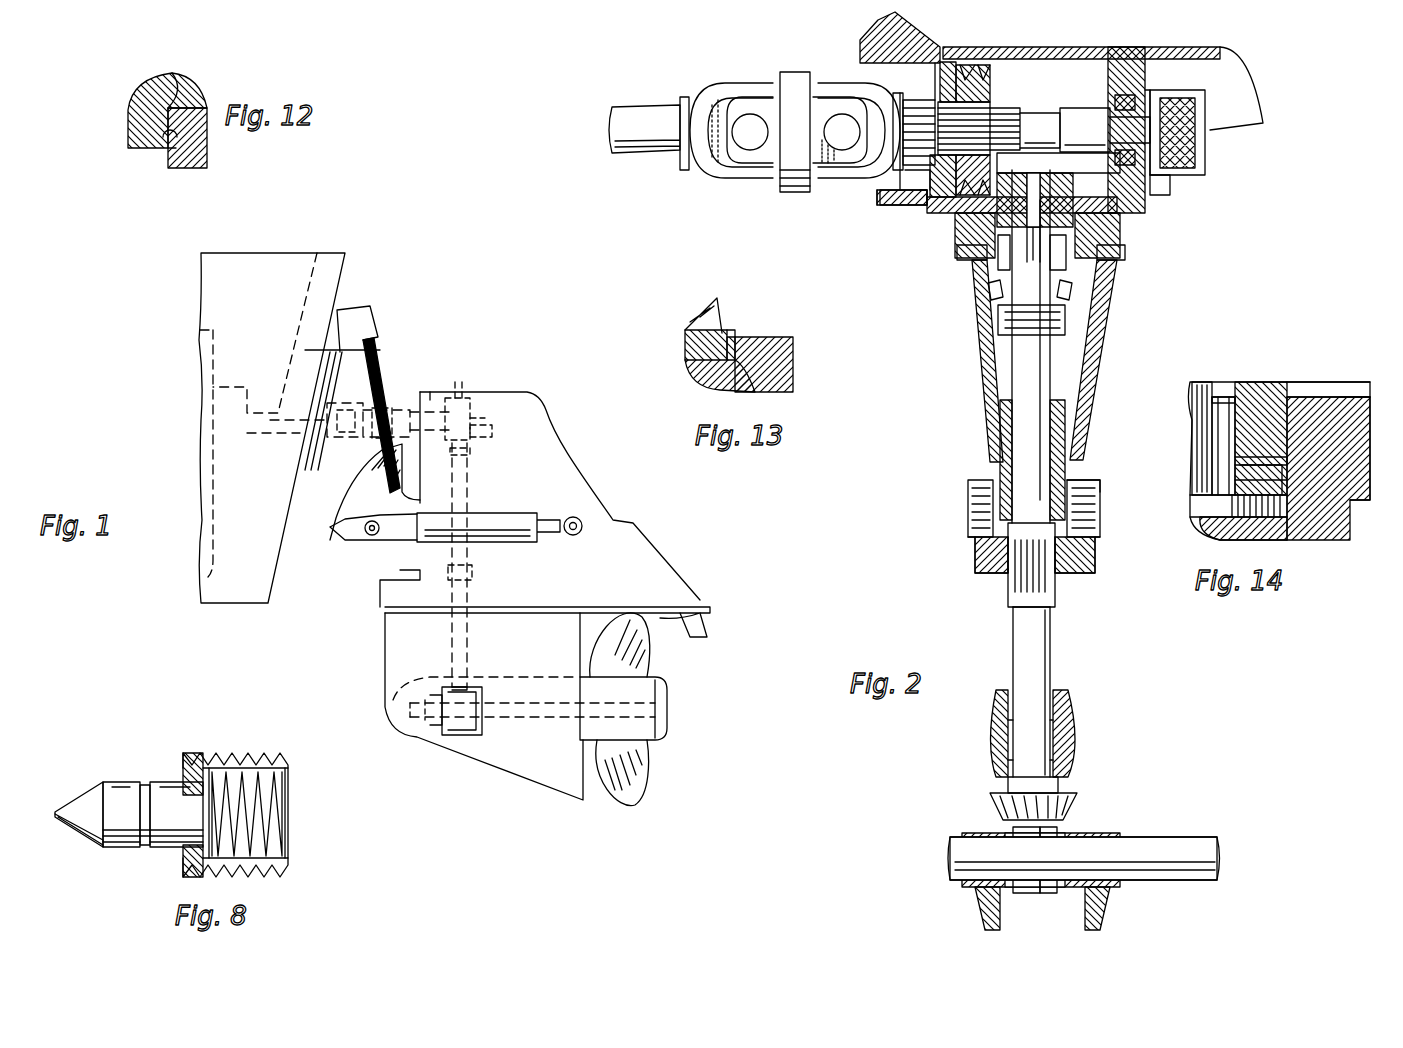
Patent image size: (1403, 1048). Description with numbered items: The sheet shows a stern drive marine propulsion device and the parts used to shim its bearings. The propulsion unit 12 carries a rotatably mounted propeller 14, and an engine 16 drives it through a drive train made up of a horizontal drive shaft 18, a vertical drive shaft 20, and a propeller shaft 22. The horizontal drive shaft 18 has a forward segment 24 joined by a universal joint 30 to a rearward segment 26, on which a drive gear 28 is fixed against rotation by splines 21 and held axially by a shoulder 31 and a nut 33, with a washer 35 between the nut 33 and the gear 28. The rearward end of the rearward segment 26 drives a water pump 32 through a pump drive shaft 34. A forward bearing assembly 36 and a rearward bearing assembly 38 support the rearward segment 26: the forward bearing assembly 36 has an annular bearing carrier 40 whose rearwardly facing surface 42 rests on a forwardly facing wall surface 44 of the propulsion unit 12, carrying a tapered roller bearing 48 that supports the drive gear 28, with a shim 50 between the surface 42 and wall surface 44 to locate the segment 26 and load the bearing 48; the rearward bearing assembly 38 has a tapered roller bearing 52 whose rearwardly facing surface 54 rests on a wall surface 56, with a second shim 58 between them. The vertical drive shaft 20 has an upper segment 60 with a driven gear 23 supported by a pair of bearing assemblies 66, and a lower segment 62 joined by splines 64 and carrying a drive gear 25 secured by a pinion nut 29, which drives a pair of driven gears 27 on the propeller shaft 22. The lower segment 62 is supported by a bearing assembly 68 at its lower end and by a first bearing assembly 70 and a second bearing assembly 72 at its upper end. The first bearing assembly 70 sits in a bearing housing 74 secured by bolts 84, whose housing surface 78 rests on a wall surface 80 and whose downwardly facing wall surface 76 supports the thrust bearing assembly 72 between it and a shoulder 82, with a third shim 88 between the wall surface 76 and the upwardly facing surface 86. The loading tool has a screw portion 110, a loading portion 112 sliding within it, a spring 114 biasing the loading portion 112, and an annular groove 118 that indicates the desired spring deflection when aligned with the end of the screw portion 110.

In FIG. 12, the propulsion unit 12 is at (208, 165).
In FIG. 13, the propulsion unit 12 is at (793, 354).
In FIG. 14, the propulsion unit 12 is at (1318, 545).
In FIG. 1, the propulsion unit 12 is at (555, 478).
In FIG. 2, the propulsion unit 12 is at (957, 250).
In FIG. 1, the propeller 14 is at (625, 658).
In FIG. 1, the engine 16 is at (208, 353).
In FIG. 1, the horizontal drive shaft 18 is at (262, 420).
In FIG. 2, the horizontal drive shaft 18 is at (672, 177).
In FIG. 1, the vertical drive shaft 20 is at (445, 628).
In FIG. 2, the vertical drive shaft 20 is at (1000, 612).
In FIG. 2, the splines 21 is at (930, 128).
In FIG. 1, the propeller shaft 22 is at (512, 725).
In FIG. 2, the propeller shaft 22 is at (1140, 852).
In FIG. 1, the gear 23 is at (500, 438).
In FIG. 2, the gear 23 is at (1070, 185).
In FIG. 2, the forward segment 24 is at (660, 118).
In FIG. 1, the drive gear 25 is at (470, 690).
In FIG. 2, the drive gear 25 is at (1008, 786).
In FIG. 2, the rearward segment 26 is at (1040, 118).
In FIG. 1, the driven gears 27 is at (455, 738).
In FIG. 2, the driven gears 27 is at (1060, 912).
In FIG. 1, the drive gear 28 is at (457, 382).
In FIG. 2, the drive gear 28 is at (978, 95).
In FIG. 2, the pinion nut 29 is at (992, 810).
In FIG. 1, the universal joint 30 is at (392, 382).
In FIG. 2, the universal joint 30 is at (798, 78).
In FIG. 2, the shoulder 31 is at (850, 92).
In FIG. 2, the water pump 32 is at (1205, 138).
In FIG. 2, the nut 33 is at (1058, 206).
In FIG. 2, the pump drive shaft 34 is at (1180, 100).
In FIG. 2, the washer 35 is at (1015, 105).
In FIG. 2, the forward bearing assembly 36 is at (877, 212).
In FIG. 2, the rearward bearing assembly 38 is at (1125, 75).
In FIG. 12, the bearing carrier 40 is at (145, 98).
In FIG. 2, the bearing carrier 40 is at (880, 205).
In FIG. 12, the rearwardly facing surface 42 is at (170, 142).
In FIG. 2, the rearwardly facing surface 42 is at (945, 45).
In FIG. 12, the wall surface 44 is at (176, 148).
In FIG. 2, the tapered roller bearing 48 is at (965, 100).
In FIG. 12, the shim 50 is at (180, 92).
In FIG. 2, the shim 50 is at (924, 207).
In FIG. 13, the tapered roller bearing 52 is at (696, 313).
In FIG. 2, the tapered roller bearing 52 is at (1120, 110).
In FIG. 13, the rearwardly facing surface 54 is at (728, 390).
In FIG. 13, the wall surface 56 is at (760, 340).
In FIG. 2, the wall surface 56 is at (1150, 83).
In FIG. 13, the second shim 58 is at (733, 335).
In FIG. 2, the second shim 58 is at (1170, 182).
In FIG. 2, the upper segment 60 is at (1030, 364).
In FIG. 2, the lower segment 62 is at (1028, 635).
In FIG. 2, the splines 64 is at (1015, 565).
In FIG. 2, the bearing assemblies 66 is at (995, 290).
In FIG. 2, the bearing assembly 68 is at (996, 738).
In FIG. 14, the first bearing assembly 70 is at (1225, 397).
In FIG. 2, the first bearing assembly 70 is at (990, 520).
In FIG. 14, the second bearing assembly 72 is at (1285, 478).
In FIG. 2, the second bearing assembly 72 is at (978, 548).
In FIG. 14, the bearing housing 74 is at (1268, 382).
In FIG. 2, the bearing housing 74 is at (1000, 435).
In FIG. 14, the wall surface 76 is at (1290, 465).
In FIG. 14, the housing surface 78 is at (1345, 400).
In FIG. 14, the wall surface 80 is at (1310, 395).
In FIG. 14, the shoulder 82 is at (1290, 505).
In FIG. 2, the bolts 84 is at (1085, 483).
In FIG. 14, the upwardly facing surface 86 is at (1265, 457).
In FIG. 14, the third shim 88 is at (1212, 464).
In FIG. 8, the screw portion 110 is at (238, 756).
In FIG. 8, the loading portion 112 is at (83, 803).
In FIG. 8, the spring 114 is at (258, 818).
In FIG. 8, the annular groove 118 is at (145, 847).